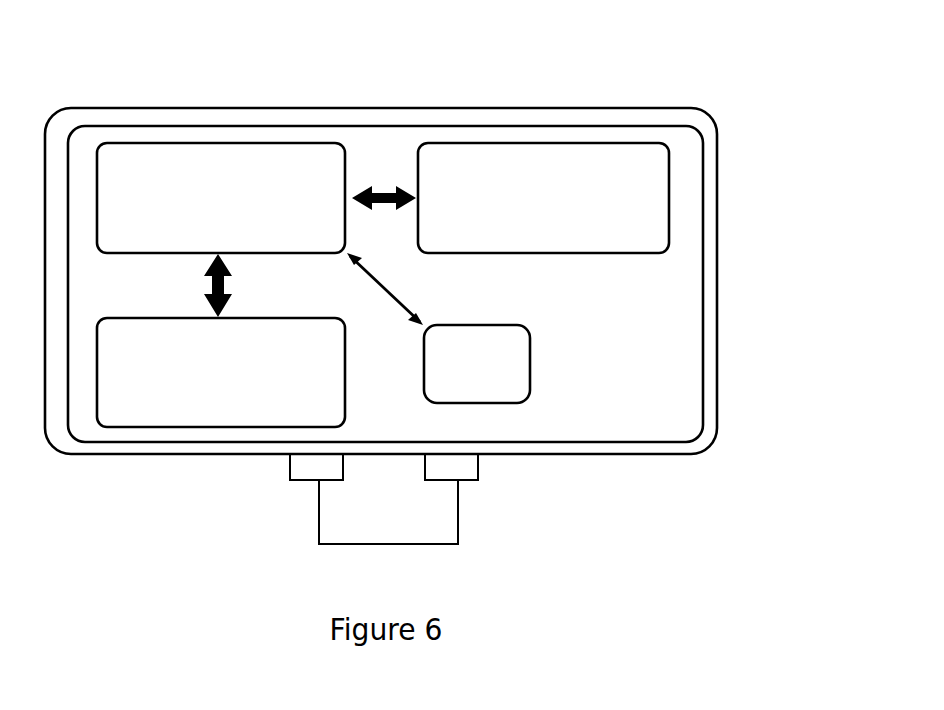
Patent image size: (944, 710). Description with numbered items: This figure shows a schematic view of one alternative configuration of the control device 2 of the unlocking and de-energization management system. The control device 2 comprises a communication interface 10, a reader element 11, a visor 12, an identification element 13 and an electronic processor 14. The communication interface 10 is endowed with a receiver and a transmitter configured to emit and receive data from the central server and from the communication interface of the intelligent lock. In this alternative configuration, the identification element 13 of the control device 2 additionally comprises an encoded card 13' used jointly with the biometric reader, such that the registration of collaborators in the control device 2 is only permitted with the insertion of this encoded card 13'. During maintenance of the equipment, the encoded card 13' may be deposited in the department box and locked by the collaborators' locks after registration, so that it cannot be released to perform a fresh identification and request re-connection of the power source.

The control device 2 is at (728, 101).
The communication interface 10 is at (543, 198).
The reader element 11 is at (477, 364).
The visor 12 is at (385, 284).
The identification element 13 is at (221, 372).
The encoded card 13' is at (331, 501).
The electronic processor 14 is at (221, 198).